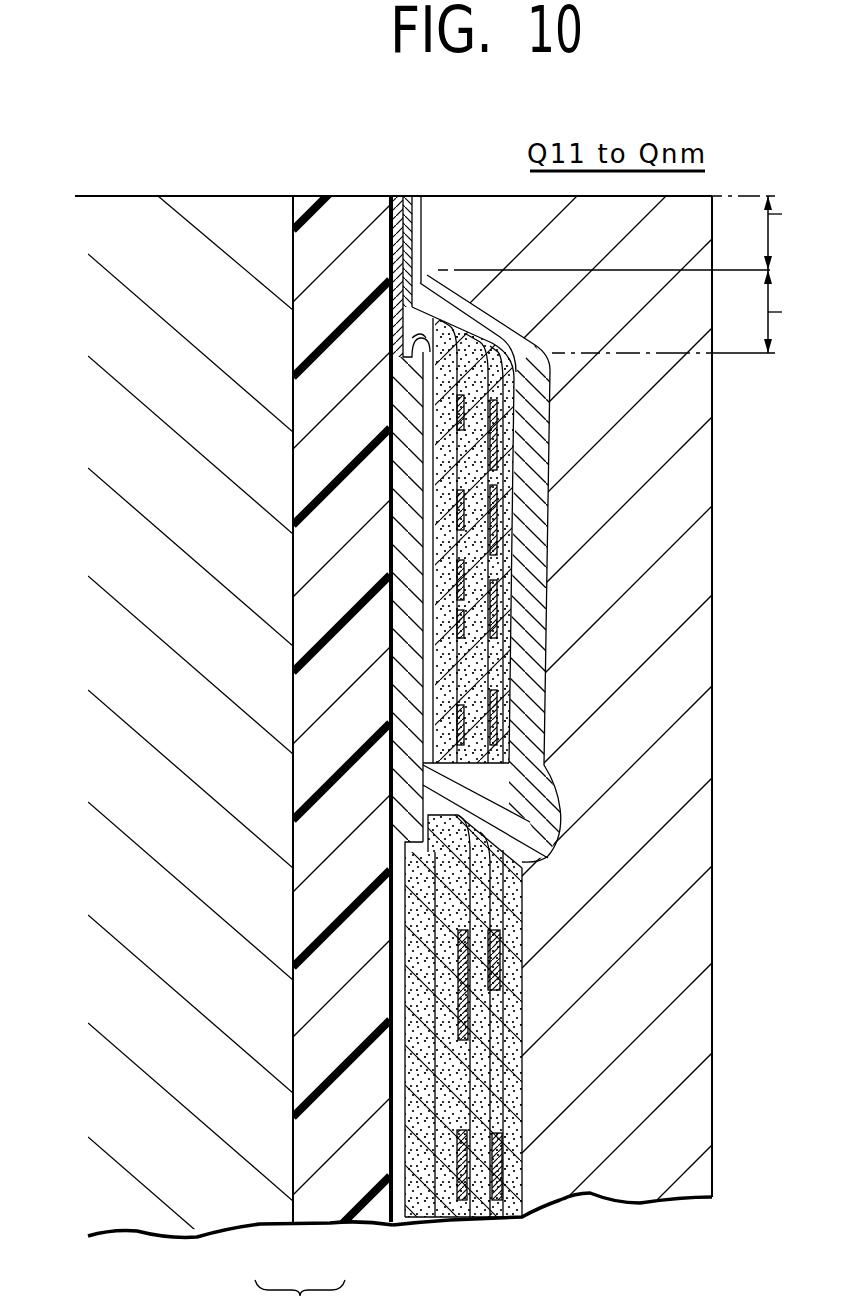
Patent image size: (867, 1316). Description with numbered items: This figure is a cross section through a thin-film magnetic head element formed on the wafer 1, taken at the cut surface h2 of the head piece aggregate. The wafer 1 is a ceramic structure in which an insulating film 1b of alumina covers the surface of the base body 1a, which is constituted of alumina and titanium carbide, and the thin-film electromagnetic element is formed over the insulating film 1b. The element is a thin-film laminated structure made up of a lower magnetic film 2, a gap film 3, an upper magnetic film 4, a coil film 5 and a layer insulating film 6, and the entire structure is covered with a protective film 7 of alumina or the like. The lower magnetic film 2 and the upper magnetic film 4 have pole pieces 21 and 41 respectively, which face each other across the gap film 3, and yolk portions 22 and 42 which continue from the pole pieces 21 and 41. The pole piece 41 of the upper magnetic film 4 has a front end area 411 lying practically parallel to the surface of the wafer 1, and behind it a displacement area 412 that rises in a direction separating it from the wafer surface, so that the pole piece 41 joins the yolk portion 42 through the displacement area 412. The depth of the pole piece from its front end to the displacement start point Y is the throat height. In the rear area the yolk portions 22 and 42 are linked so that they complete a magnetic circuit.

The wafer 1 is at (300, 1298).
The base body 1a is at (253, 1205).
The insulating film 1b is at (325, 1205).
The lower magnetic film 2 is at (378, 646).
The pole piece 21 is at (378, 258).
The yolk portion 22 is at (402, 525).
The gap film 3 is at (408, 330).
The upper magnetic film 4 is at (580, 655).
The pole piece 41 is at (438, 264).
The front end area 411 is at (643, 233).
The displacement area 412 is at (691, 311).
The yolk portion 42 is at (535, 515).
The coil film 5 is at (505, 455).
The layer insulating film 6 is at (512, 1240).
The protective film 7 is at (665, 598).
The cut surface h2 is at (133, 188).
The displacement start point Y is at (381, 288).